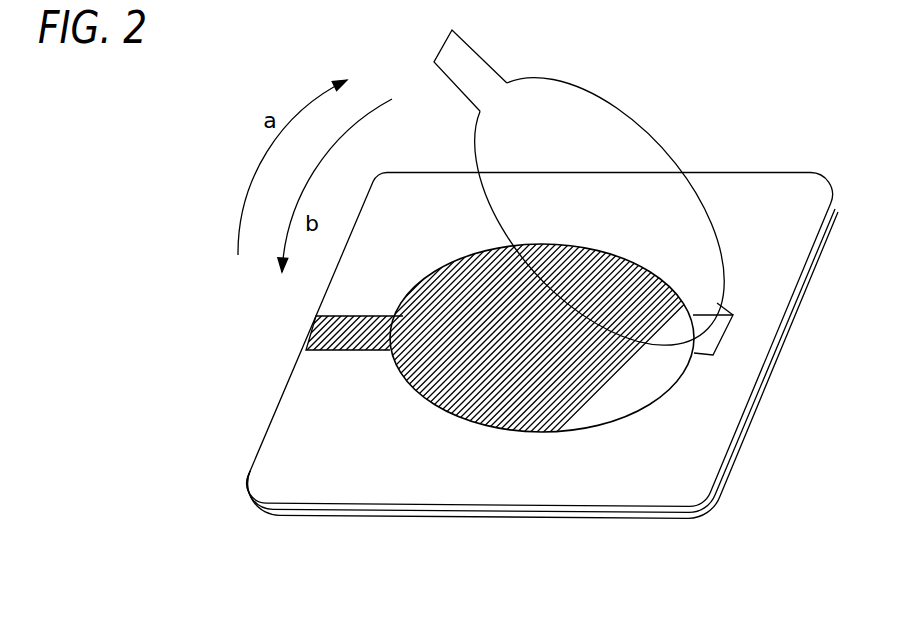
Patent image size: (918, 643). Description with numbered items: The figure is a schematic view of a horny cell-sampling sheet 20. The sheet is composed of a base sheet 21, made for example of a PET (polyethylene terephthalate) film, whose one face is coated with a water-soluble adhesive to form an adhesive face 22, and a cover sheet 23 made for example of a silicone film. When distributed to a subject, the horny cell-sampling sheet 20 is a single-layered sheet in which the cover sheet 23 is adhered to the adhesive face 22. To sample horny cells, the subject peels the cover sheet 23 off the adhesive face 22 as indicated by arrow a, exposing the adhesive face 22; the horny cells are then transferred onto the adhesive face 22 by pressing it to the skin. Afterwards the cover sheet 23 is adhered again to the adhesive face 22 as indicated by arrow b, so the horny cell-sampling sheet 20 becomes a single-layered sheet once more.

The horny cell-sampling sheet 20 is at (469, 308).
The base sheet 21 is at (297, 518).
The adhesive face 22 is at (427, 383).
The cover sheet 23 is at (600, 100).